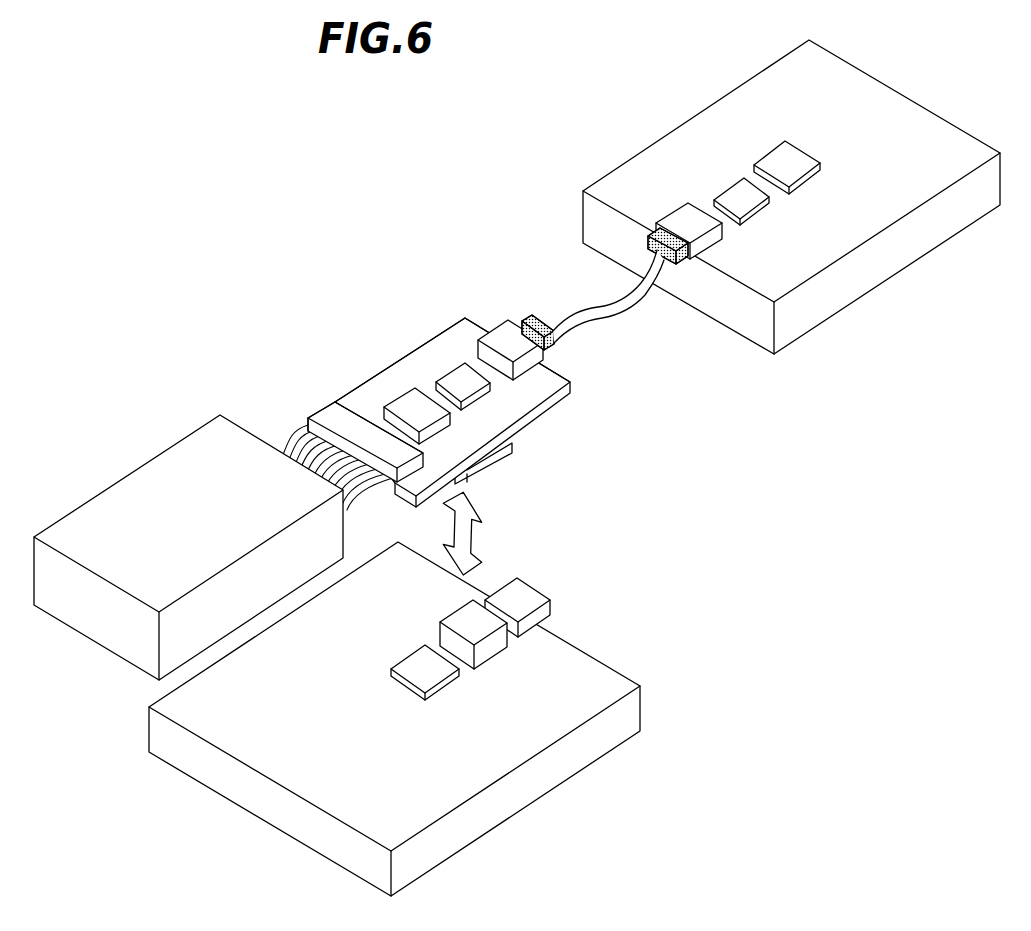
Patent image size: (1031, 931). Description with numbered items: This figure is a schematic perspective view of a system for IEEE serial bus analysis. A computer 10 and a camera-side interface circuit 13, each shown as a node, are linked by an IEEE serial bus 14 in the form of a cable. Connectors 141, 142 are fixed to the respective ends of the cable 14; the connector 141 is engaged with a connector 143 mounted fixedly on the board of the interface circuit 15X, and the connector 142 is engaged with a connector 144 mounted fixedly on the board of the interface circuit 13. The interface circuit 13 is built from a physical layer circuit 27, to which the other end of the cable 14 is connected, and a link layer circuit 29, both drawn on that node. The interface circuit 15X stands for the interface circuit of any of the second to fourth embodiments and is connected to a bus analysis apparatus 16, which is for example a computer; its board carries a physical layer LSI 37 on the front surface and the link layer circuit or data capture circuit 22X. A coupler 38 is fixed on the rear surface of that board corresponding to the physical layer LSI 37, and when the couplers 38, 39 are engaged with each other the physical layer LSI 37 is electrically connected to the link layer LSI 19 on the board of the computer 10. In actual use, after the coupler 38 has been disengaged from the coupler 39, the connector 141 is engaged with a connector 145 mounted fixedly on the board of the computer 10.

The computer 10 is at (517, 815).
The interface circuit 13 is at (698, 113).
The IEEE 1394 serial bus 14 is at (610, 306).
The connector 141 is at (554, 342).
The connector 142 is at (679, 263).
The connector 143 is at (498, 325).
The connector 144 is at (670, 212).
The connector 145 is at (534, 585).
The interface circuit 15X is at (375, 376).
The 1394 bus analysis apparatus 16 is at (127, 474).
The link layer circuit 19 is at (407, 651).
The link layer circuit 22X is at (435, 430).
The physical layer circuit 27 is at (726, 185).
The link layer circuit 29 is at (767, 152).
The physical layer LSI 37 is at (448, 370).
The coupler 38 is at (512, 445).
The coupler 39 is at (457, 608).